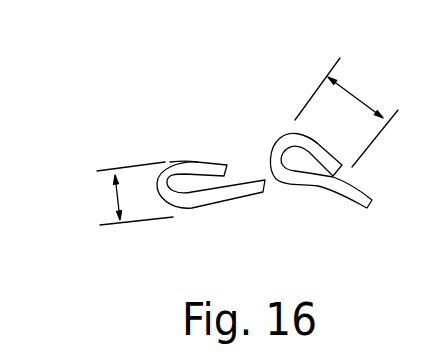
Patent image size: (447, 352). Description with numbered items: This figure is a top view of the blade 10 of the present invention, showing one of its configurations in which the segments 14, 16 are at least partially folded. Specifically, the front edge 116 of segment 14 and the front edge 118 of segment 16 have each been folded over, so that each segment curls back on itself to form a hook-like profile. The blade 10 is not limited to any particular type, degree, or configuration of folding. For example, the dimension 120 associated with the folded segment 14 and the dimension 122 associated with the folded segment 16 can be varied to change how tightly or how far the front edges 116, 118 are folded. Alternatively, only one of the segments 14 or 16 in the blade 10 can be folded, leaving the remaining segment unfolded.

The blade 10 is at (218, 130).
The segment 14 is at (213, 205).
The segment 16 is at (323, 187).
The front edge 116 is at (194, 162).
The front edge 118 is at (322, 143).
The dimension 120 is at (115, 195).
The dimension 122 is at (358, 98).